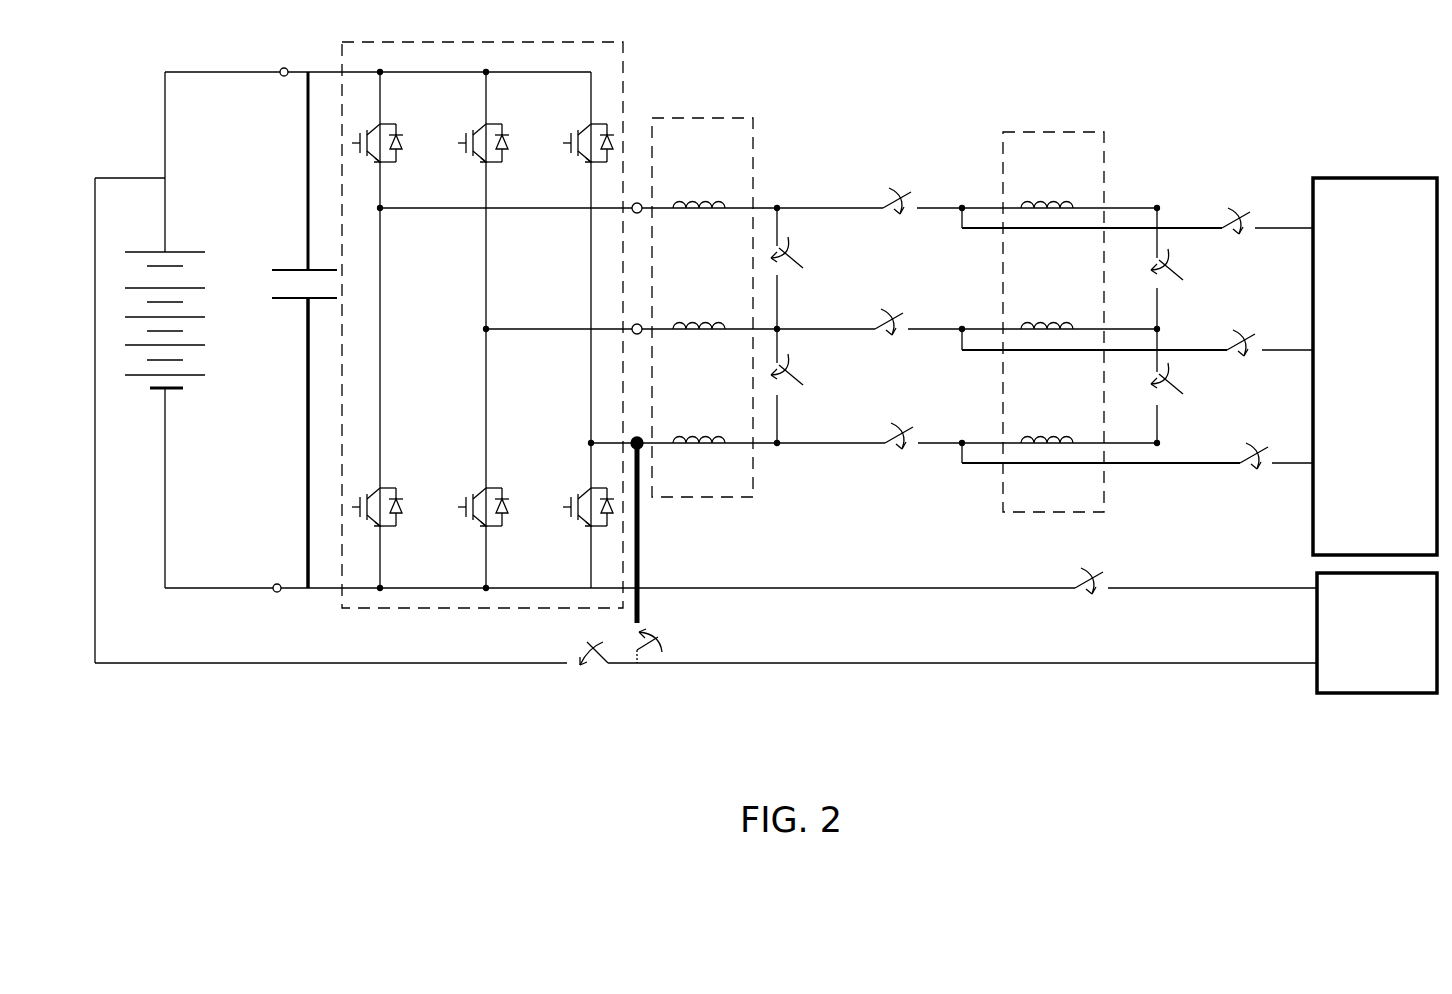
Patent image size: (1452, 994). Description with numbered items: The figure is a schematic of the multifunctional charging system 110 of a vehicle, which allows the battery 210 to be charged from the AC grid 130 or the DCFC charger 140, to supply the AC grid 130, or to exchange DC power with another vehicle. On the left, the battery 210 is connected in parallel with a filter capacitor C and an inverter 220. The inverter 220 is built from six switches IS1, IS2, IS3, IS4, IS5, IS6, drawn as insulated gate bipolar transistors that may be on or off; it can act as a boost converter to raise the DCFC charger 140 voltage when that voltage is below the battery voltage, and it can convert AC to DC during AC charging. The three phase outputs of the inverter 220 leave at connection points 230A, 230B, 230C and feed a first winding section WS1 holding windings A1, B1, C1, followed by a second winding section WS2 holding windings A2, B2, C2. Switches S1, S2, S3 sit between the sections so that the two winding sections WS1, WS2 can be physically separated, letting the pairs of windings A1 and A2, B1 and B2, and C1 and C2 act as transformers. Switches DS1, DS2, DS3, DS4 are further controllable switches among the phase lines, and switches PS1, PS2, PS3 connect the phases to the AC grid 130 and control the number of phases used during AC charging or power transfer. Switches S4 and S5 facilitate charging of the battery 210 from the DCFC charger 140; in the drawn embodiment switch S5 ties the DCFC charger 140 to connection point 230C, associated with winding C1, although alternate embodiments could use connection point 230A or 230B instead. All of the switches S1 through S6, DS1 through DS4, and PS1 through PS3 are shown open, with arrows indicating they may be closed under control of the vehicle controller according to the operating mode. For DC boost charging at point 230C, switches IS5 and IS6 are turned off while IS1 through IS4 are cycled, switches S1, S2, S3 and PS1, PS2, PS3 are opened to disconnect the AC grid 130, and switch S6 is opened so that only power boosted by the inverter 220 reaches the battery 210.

The multifunctional charging system 110 is at (1316, 86).
The AC grid 130 is at (1375, 366).
The DCFC charger 140 is at (1364, 631).
The battery 210 is at (206, 243).
The inverter 220 is at (405, 609).
The connection point 230A is at (637, 202).
The connection point 230B is at (637, 323).
The connection point 230C is at (634, 437).
The filter capacitor C is at (293, 330).
The inverter switch IS1 is at (393, 161).
The inverter switch IS2 is at (393, 525).
The inverter switch IS3 is at (468, 135).
The inverter switch IS4 is at (472, 498).
The inverter switch IS5 is at (579, 131).
The inverter switch IS6 is at (579, 498).
The first winding section WS1 is at (717, 118).
The second winding section WS2 is at (1055, 132).
The winding A1 is at (699, 184).
The winding B1 is at (699, 304).
The winding C1 is at (699, 418).
The winding A2 is at (1048, 184).
The winding B2 is at (1049, 304).
The winding C2 is at (1047, 418).
The switch DS1 is at (807, 268).
The switch DS2 is at (807, 386).
The switch DS3 is at (1184, 268).
The switch DS4 is at (1188, 386).
The switch S1 is at (922, 223).
The switch S2 is at (918, 343).
The switch S3 is at (923, 457).
The switch S4 is at (1082, 564).
The switch S5 is at (665, 635).
The switch S6 is at (572, 647).
The phase switch PS1 is at (1267, 241).
The phase switch PS2 is at (1270, 363).
The phase switch PS3 is at (1276, 477).